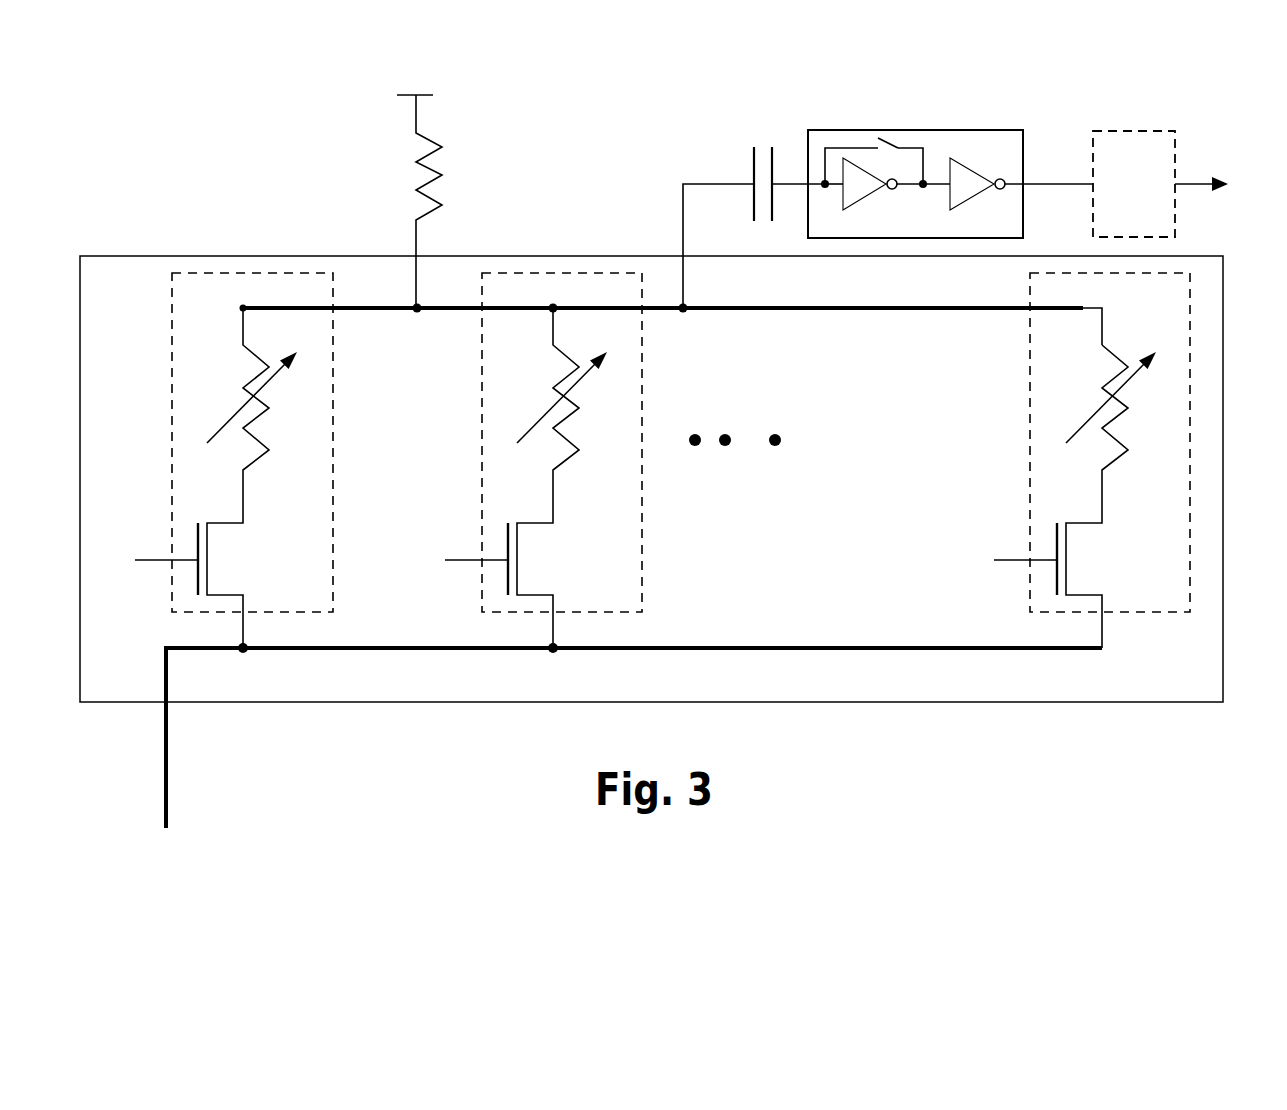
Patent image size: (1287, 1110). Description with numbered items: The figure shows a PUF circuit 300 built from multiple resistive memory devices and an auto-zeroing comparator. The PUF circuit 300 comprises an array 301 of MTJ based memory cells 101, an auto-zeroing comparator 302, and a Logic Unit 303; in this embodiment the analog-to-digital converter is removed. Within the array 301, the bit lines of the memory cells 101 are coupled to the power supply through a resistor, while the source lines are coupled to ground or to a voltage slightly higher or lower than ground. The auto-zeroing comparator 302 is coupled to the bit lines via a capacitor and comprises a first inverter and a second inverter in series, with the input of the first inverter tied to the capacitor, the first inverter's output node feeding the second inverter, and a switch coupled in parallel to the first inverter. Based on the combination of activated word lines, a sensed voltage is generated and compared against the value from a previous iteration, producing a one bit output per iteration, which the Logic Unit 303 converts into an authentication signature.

The PUF circuit 300 is at (189, 76).
The array 301 is at (133, 694).
The auto-zeroing comparator 302 is at (1014, 230).
The Logic Unit 303 is at (1114, 222).
The MTJ based memory cell 101 is at (638, 460).